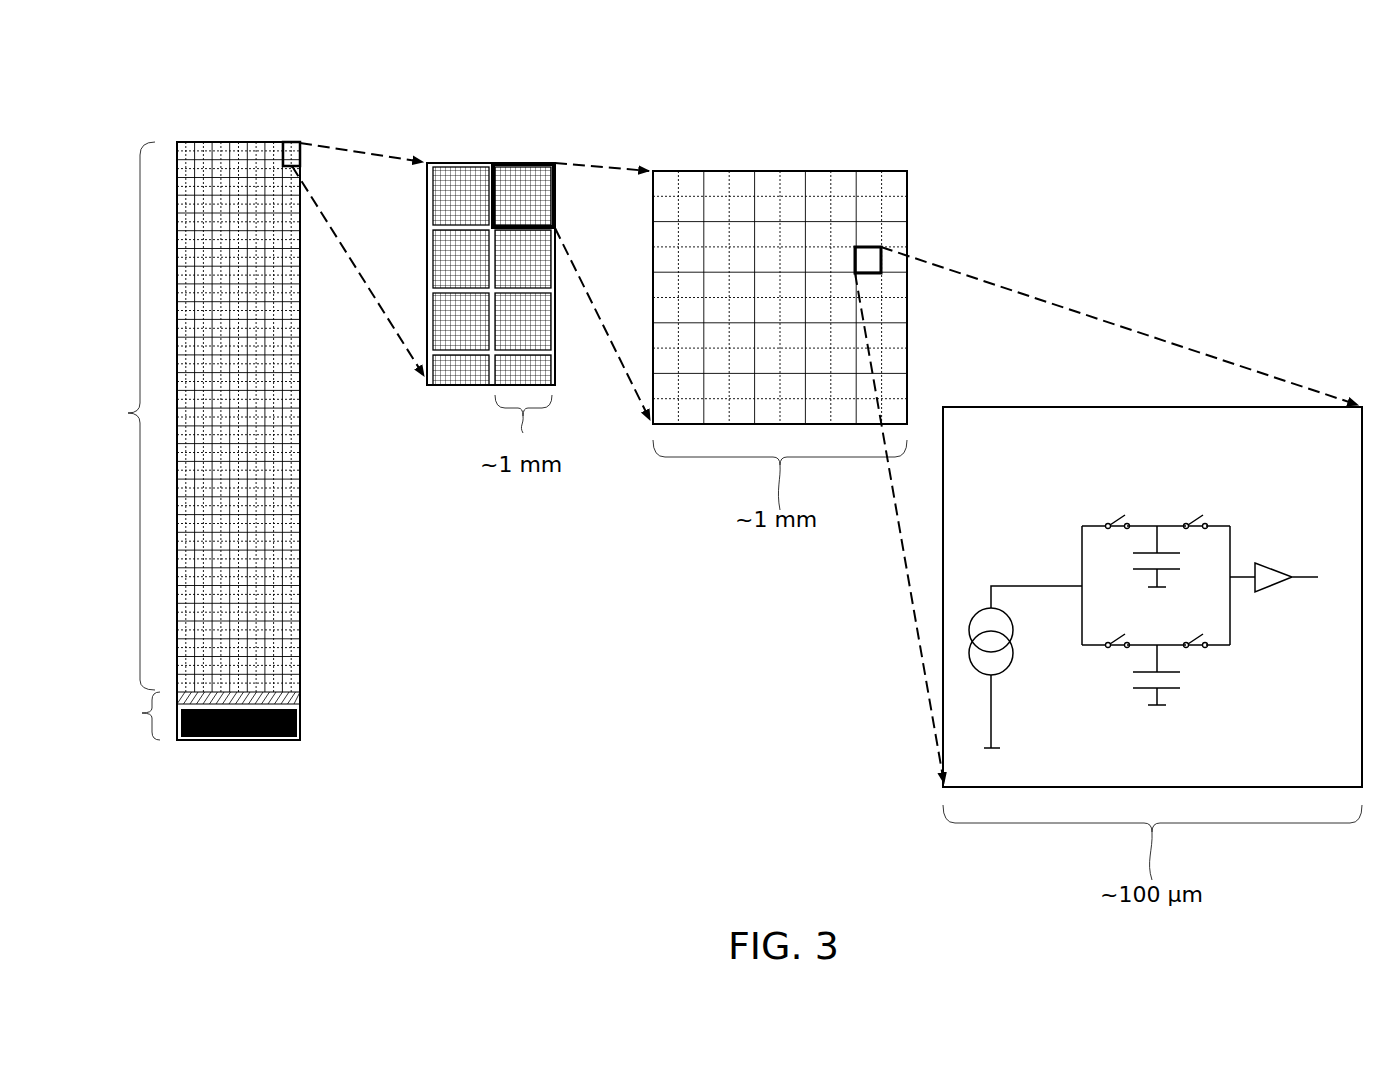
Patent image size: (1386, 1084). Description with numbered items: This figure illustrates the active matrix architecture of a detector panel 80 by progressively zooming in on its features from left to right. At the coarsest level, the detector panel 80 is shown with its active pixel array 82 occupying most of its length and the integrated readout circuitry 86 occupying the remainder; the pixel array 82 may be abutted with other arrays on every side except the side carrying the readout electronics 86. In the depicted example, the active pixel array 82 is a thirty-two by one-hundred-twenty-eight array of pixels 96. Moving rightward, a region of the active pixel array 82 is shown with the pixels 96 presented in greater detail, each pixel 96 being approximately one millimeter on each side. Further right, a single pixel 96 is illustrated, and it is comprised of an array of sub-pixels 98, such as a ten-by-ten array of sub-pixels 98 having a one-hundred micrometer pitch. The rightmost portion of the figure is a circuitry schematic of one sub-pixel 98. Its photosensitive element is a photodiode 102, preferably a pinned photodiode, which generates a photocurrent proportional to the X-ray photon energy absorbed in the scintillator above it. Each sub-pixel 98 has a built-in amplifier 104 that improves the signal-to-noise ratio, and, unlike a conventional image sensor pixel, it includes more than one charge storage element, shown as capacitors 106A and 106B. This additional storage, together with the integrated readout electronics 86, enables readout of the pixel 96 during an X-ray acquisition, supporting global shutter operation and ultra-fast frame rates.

The detector panel 80 is at (236, 116).
The active pixel array 82 is at (128, 413).
The integrated readout circuitry 86 is at (142, 713).
The pixel 96 is at (520, 161).
The sub-pixel 98 is at (820, 188).
The photodiode 102 is at (1017, 662).
The amplifier 104 is at (1282, 599).
The capacitor 106A is at (1167, 513).
The capacitor 106B is at (1174, 702).